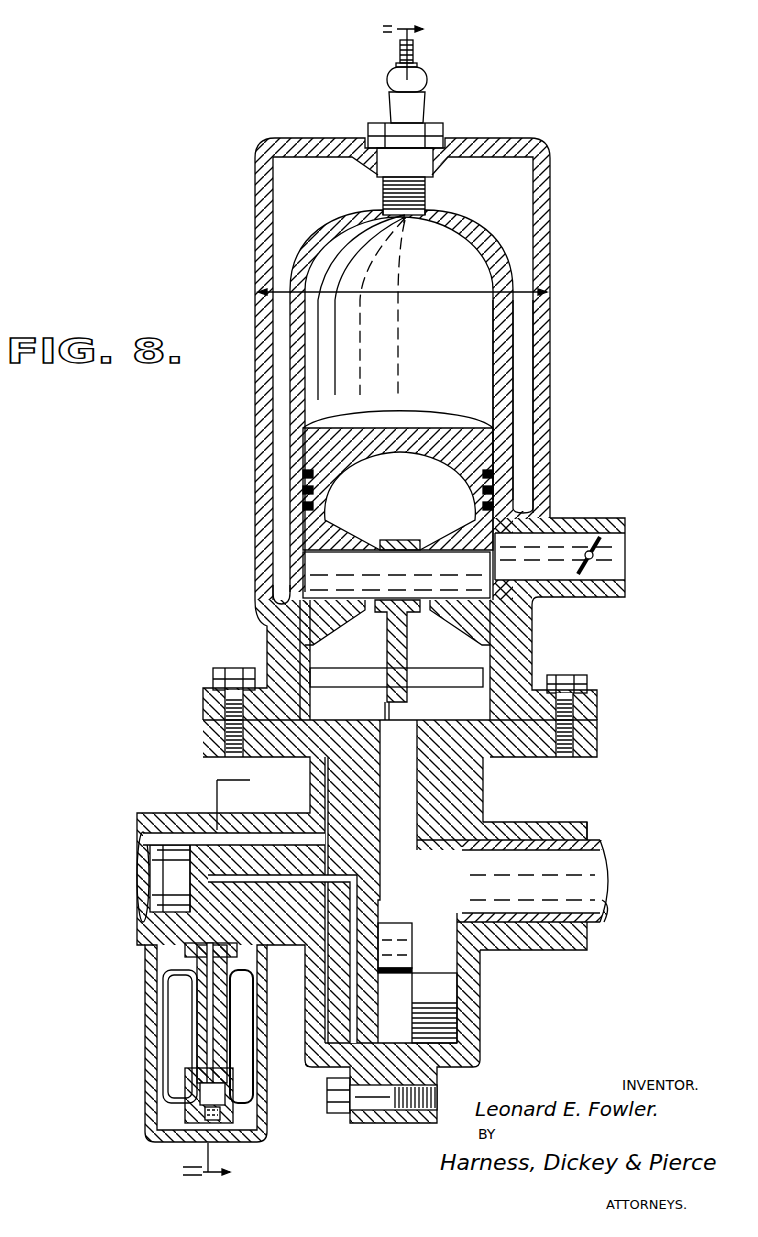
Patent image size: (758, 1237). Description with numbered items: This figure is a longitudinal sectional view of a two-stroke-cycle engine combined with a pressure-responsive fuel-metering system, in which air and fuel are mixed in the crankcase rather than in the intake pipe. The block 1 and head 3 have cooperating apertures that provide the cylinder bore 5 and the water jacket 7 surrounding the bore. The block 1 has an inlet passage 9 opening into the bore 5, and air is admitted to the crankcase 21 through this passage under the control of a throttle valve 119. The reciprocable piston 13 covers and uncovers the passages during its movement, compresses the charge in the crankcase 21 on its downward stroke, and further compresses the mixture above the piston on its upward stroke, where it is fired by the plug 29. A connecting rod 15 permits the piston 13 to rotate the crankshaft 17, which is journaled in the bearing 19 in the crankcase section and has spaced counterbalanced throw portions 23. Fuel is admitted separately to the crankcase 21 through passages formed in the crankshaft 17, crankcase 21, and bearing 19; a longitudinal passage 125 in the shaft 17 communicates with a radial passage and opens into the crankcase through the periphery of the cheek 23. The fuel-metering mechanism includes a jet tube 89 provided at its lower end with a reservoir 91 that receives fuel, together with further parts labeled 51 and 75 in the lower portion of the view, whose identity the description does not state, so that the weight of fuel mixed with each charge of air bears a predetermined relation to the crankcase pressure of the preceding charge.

The block 1 is at (540, 332).
The head 3 is at (540, 212).
The cylinder bore 5 is at (492, 358).
The water jacket 7 is at (524, 384).
The inlet passage 9 is at (566, 536).
The piston 13 is at (405, 432).
The connecting rod 15 is at (400, 652).
The crankshaft 17 is at (598, 858).
The crankshaft bearing 19 is at (517, 843).
The crankcase 21 is at (590, 823).
The counterbalanced throw portion 23 is at (448, 985).
The spark plug 29 is at (418, 114).
The tube 51 is at (178, 1012).
The plunger 75 is at (395, 938).
The jet tube 89 is at (198, 1040).
The reservoir 91 is at (205, 1090).
The throttle valve 119 is at (612, 540).
The longitudinal passage 125 is at (322, 880).